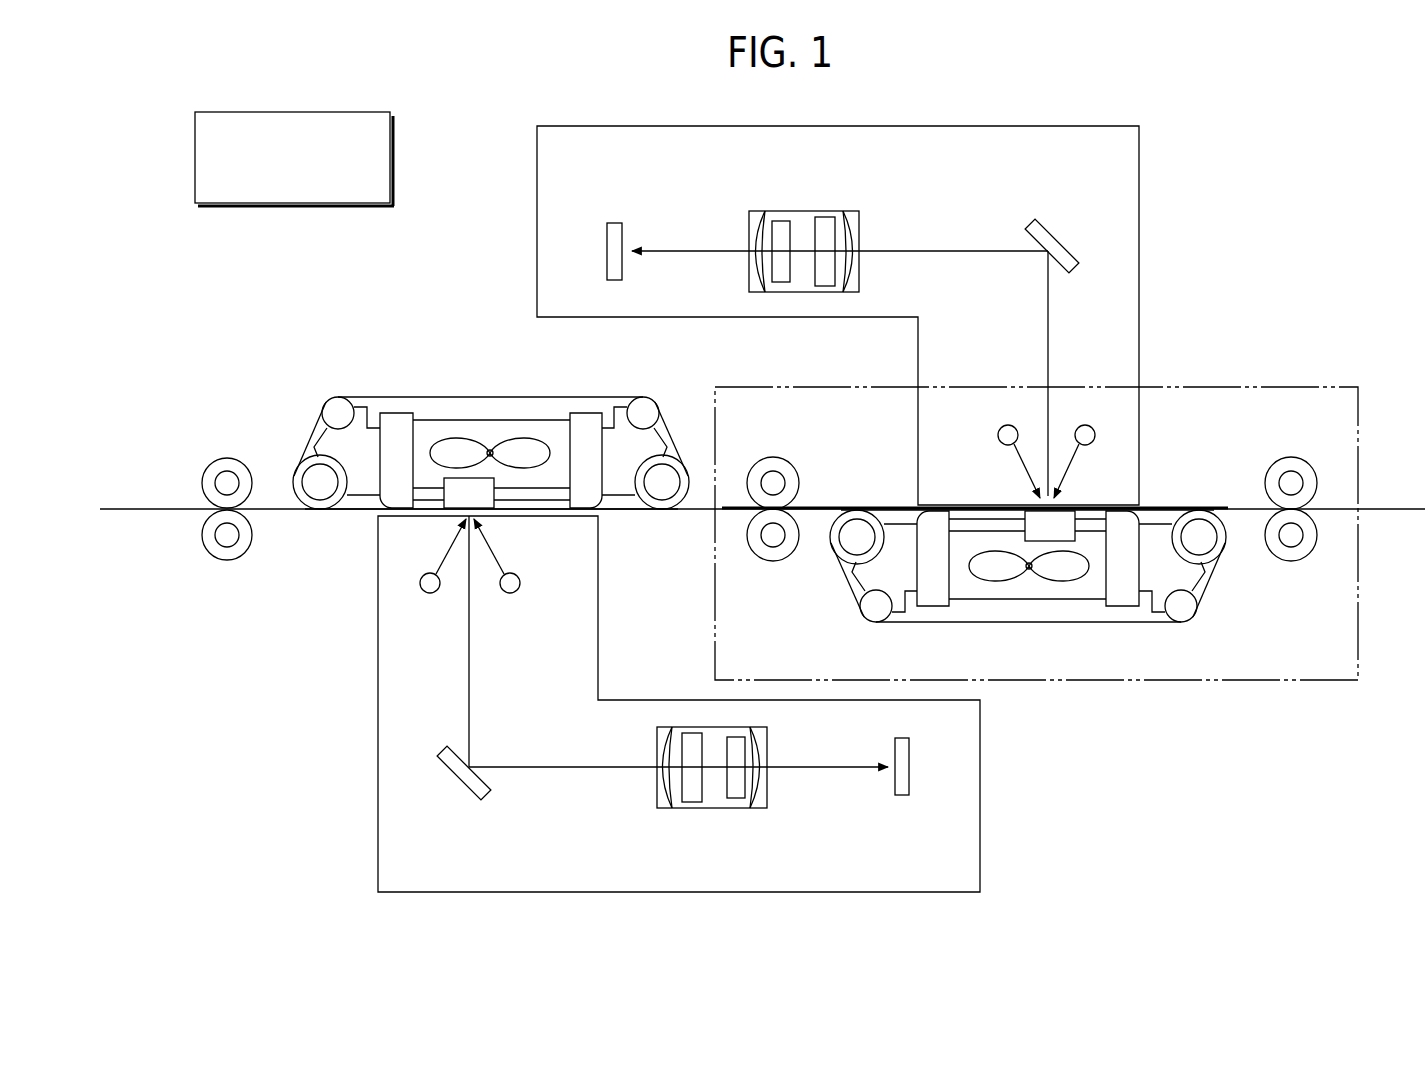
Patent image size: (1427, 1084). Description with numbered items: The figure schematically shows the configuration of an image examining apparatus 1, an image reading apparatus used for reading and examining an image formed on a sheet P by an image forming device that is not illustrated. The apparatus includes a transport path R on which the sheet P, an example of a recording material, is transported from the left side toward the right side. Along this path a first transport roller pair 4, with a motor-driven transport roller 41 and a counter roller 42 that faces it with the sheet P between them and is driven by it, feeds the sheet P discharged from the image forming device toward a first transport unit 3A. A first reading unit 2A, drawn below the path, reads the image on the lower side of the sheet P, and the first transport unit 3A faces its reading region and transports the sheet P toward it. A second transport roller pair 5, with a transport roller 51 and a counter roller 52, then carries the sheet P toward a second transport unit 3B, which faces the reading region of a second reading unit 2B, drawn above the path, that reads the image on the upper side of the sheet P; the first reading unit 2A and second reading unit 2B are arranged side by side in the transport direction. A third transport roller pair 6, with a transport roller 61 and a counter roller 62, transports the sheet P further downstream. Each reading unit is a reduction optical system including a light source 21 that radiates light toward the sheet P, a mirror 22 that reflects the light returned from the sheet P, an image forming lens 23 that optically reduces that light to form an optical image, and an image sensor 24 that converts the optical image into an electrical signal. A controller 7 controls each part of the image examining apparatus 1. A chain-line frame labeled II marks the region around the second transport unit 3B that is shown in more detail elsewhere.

The image examining apparatus 1 is at (1314, 105).
The first reading unit 2A is at (374, 861).
The second reading unit 2B is at (1166, 150).
The first transport unit 3A is at (333, 389).
The second transport unit 3B is at (1177, 630).
The first transport roller pair 4 is at (186, 461).
The transport roller 41 is at (227, 483).
The counter roller 42 is at (227, 535).
The second transport roller pair 5 is at (788, 486).
The transport roller 51 is at (773, 483).
The counter roller 52 is at (773, 537).
The third transport roller pair 6 is at (1245, 516).
The transport roller 61 is at (1291, 483).
The counter roller 62 is at (1291, 537).
The controller 7 is at (392, 158).
The light source 21 is at (1086, 426).
The mirror 22 is at (1058, 236).
The image forming lens 23 is at (826, 210).
The image sensor 24 is at (614, 222).
The sheet P is at (888, 505).
The transport path R is at (1403, 511).
The section indicator II is at (1292, 387).